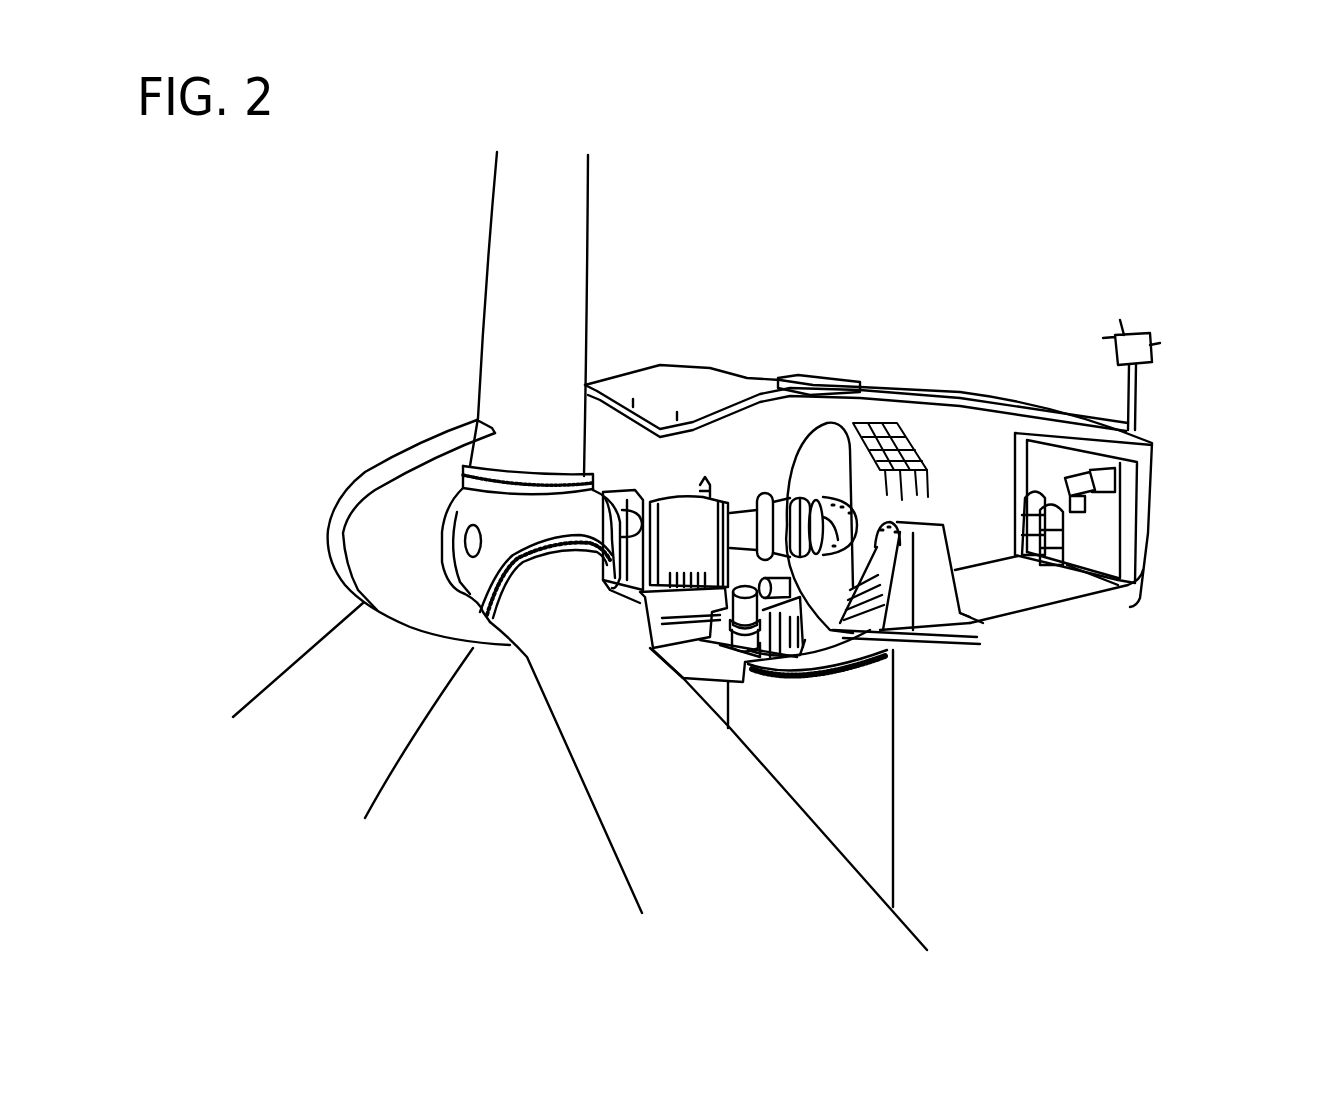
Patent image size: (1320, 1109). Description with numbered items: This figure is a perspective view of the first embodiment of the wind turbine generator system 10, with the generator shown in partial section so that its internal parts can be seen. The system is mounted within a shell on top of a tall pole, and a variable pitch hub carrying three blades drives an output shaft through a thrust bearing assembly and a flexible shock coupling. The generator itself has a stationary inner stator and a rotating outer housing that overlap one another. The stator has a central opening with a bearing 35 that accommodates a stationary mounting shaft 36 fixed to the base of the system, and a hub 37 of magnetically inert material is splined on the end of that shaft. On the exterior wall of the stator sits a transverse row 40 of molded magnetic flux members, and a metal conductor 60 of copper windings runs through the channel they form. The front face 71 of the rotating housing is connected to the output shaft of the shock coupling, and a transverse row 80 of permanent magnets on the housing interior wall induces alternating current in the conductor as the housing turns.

The wind turbine generator system 10 is at (340, 312).
The bearing 35 is at (858, 528).
The stationary mounting shaft 36 is at (855, 557).
The hub 37 is at (853, 562).
The transverse row of molded magnetic flux members 40 is at (908, 445).
The metal conductor 60 is at (930, 490).
The front face 71 is at (822, 452).
The transverse row of permanent magnets 80 is at (893, 650).